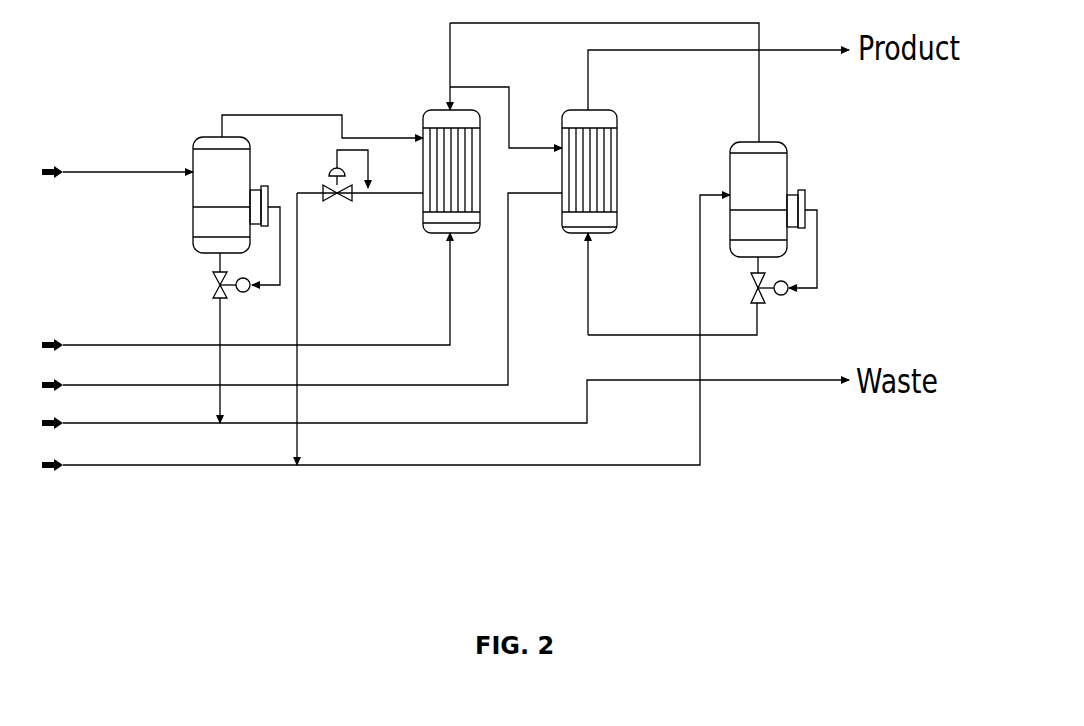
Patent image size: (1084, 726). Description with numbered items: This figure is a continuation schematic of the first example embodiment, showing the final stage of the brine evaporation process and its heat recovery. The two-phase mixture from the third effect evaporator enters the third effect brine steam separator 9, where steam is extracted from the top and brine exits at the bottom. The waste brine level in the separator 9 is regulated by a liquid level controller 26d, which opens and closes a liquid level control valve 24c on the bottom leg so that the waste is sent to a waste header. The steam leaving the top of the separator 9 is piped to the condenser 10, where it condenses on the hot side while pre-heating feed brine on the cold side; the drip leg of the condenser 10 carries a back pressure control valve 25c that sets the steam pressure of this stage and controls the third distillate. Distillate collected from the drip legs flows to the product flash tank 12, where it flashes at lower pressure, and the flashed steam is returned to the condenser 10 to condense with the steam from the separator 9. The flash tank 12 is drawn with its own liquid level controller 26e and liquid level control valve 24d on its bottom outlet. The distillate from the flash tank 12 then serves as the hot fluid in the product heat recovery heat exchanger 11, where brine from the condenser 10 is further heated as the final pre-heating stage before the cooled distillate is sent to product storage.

The third effect brine steam separator 9 is at (208, 135).
The condenser 10 is at (440, 108).
The product heat recovery heat exchanger 11 is at (578, 108).
The product flash tank 12 is at (748, 140).
The back pressure control valve 25c is at (334, 162).
The liquid level controller 26d is at (262, 189).
The liquid level controller 26e is at (818, 172).
The liquid level control valve 24c is at (232, 301).
The liquid level control valve 24d is at (770, 302).